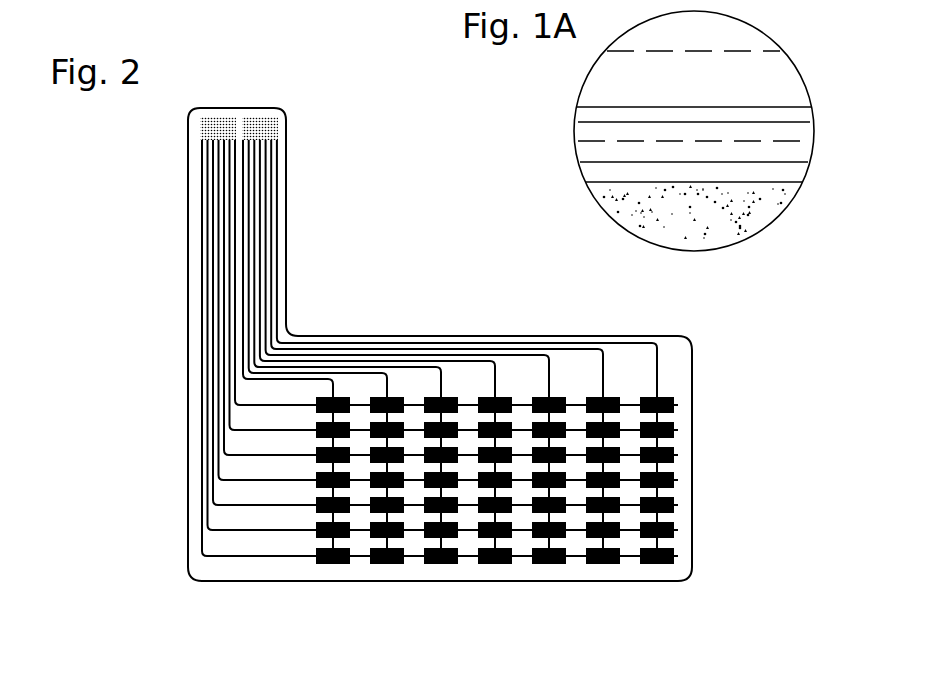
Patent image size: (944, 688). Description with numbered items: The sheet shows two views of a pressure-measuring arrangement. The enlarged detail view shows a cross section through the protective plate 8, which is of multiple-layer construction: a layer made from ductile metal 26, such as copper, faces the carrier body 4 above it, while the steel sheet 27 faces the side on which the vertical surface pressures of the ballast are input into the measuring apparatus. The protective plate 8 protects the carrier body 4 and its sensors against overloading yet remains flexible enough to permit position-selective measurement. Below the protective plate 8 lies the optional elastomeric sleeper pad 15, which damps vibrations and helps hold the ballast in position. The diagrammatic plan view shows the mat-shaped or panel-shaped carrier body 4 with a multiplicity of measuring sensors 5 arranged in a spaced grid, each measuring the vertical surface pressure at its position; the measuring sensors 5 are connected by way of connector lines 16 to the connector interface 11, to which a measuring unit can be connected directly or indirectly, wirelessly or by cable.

In FIG. 2, the carrier body 4 is at (678, 358).
In FIG. 1A, the carrier body 4 is at (763, 78).
In FIG. 2, the measuring sensors 5 is at (670, 478).
In FIG. 1A, the protective plate 8 is at (822, 139).
In FIG. 2, the connector interface 11 is at (278, 138).
In FIG. 1A, the sleeper pad 15 is at (648, 215).
In FIG. 2, the connector lines 16 is at (280, 480).
In FIG. 1A, the layer made from ductile metal 26 is at (588, 130).
In FIG. 1A, the steel sheet 27 is at (590, 152).